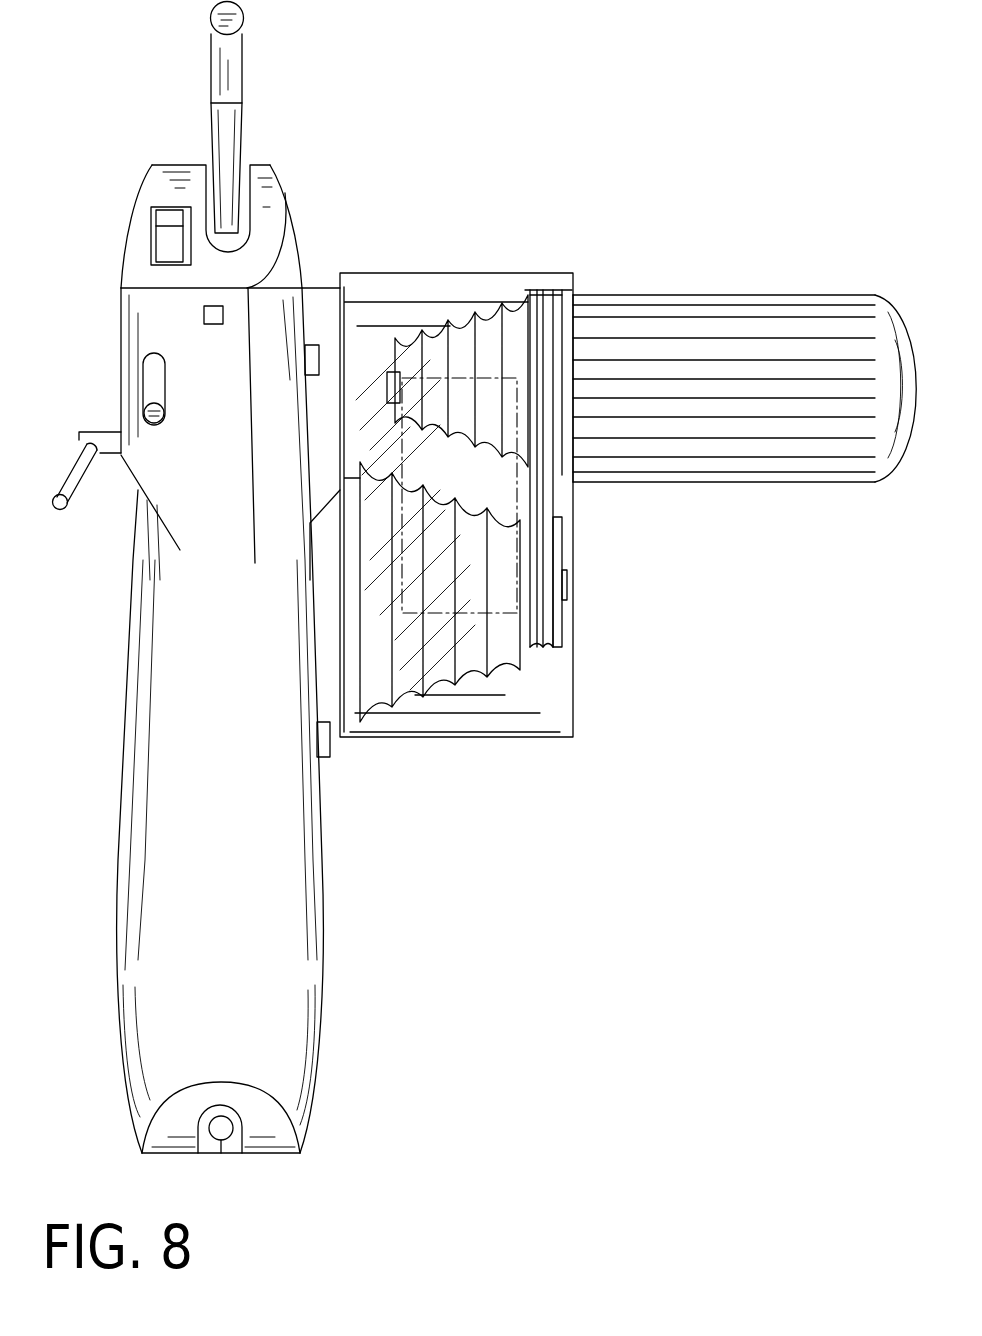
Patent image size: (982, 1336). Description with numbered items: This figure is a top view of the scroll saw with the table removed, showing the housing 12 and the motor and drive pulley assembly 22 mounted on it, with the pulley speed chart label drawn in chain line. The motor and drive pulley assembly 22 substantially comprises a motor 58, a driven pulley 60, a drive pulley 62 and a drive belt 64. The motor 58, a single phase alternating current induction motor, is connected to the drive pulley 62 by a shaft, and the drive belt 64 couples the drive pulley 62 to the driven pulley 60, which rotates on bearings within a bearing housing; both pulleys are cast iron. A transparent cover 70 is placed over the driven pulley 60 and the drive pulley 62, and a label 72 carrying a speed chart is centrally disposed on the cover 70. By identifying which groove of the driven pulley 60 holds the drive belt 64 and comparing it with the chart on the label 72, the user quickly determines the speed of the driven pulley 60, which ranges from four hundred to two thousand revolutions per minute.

The housing 12 is at (302, 257).
The motor and drive pulley assembly 22 is at (705, 293).
The motor 58 is at (808, 293).
The driven pulley 60 is at (408, 698).
The drive pulley 62 is at (517, 303).
The drive belt 64 is at (547, 290).
The transparent cover 70 is at (560, 711).
The label 72 is at (510, 553).